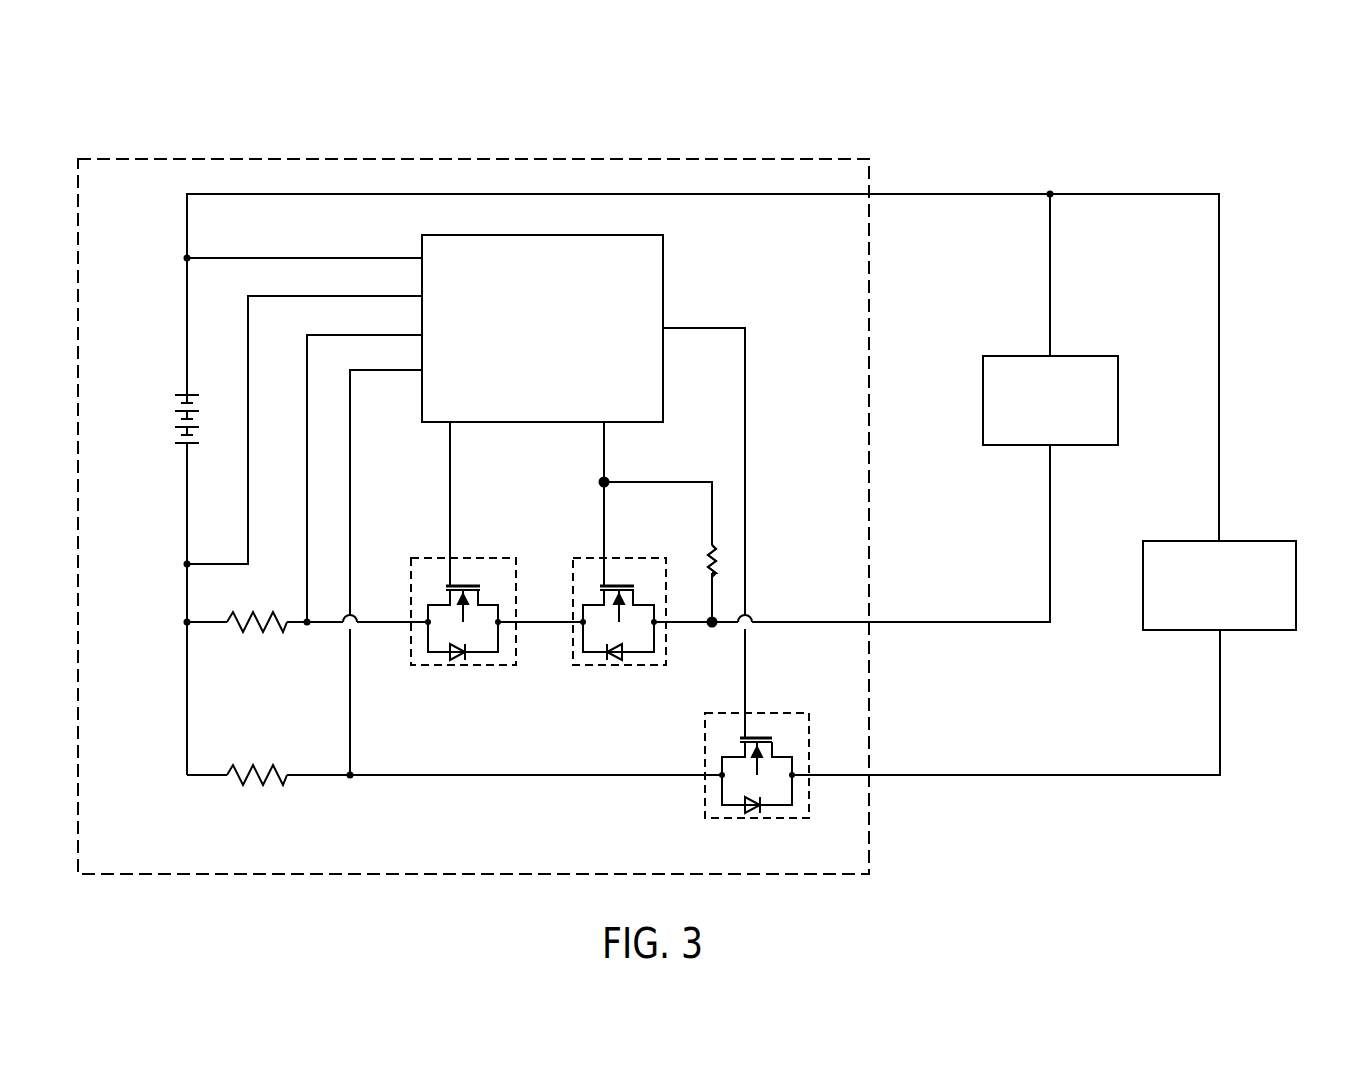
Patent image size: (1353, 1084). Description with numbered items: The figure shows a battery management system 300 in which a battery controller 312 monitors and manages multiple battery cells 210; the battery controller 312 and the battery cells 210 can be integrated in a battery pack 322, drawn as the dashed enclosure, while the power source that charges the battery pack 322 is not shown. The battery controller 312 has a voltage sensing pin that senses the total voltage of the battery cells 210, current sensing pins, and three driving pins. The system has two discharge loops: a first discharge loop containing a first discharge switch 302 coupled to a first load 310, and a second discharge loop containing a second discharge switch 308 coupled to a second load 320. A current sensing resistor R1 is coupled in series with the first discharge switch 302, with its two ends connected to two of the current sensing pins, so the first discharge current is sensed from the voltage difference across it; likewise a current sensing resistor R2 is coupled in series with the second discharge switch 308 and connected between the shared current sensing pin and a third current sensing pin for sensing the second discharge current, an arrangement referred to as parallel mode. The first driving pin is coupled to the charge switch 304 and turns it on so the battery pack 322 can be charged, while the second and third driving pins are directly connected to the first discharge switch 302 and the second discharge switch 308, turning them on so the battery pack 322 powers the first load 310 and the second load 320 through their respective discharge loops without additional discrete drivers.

The battery management system 300 is at (200, 124).
The battery pack 322 is at (673, 159).
The battery cells 210 is at (185, 393).
The battery controller 312 is at (663, 296).
The first discharge switch 302 is at (440, 558).
The charge switch 304 is at (625, 558).
The second discharge switch 308 is at (762, 713).
The first load 310 is at (1078, 356).
The second load 320 is at (1252, 541).
The current sensing resistor R1 is at (230, 618).
The current sensing resistor R2 is at (233, 770).